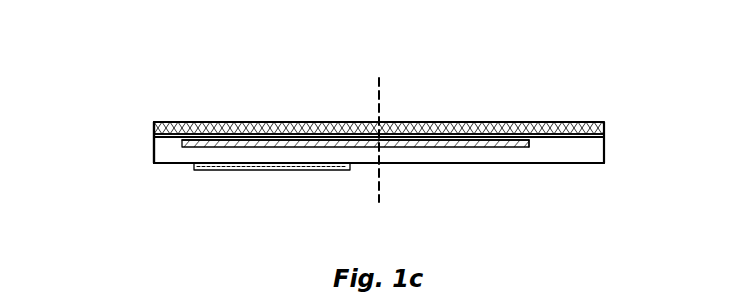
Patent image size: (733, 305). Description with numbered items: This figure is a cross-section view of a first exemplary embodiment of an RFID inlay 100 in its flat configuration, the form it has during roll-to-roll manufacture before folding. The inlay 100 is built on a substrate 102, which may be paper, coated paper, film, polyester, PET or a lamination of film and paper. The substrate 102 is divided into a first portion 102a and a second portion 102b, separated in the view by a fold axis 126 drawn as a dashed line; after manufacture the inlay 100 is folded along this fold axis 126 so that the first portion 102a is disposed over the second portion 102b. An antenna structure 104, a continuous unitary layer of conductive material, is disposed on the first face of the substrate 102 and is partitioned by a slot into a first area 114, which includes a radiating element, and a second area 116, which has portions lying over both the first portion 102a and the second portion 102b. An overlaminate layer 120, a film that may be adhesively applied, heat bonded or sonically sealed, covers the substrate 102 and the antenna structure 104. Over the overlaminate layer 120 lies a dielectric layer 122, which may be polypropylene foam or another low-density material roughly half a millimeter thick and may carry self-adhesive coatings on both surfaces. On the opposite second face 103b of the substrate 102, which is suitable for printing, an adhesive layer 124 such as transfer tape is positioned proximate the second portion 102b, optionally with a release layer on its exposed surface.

The RFID inlay 100 is at (98, 64).
The substrate 102 is at (558, 157).
The first portion of substrate 102a is at (529, 226).
The second portion of substrate 102b is at (252, 214).
The second face of substrate 103b is at (180, 164).
The antenna structure 104 is at (470, 144).
The first area of antenna structure 114 is at (513, 140).
The second area of antenna structure 116 is at (293, 140).
The overlaminate layer 120 is at (598, 137).
The dielectric layer 122 is at (238, 126).
The adhesive layer 124 is at (320, 168).
The fold axis 126 is at (381, 104).